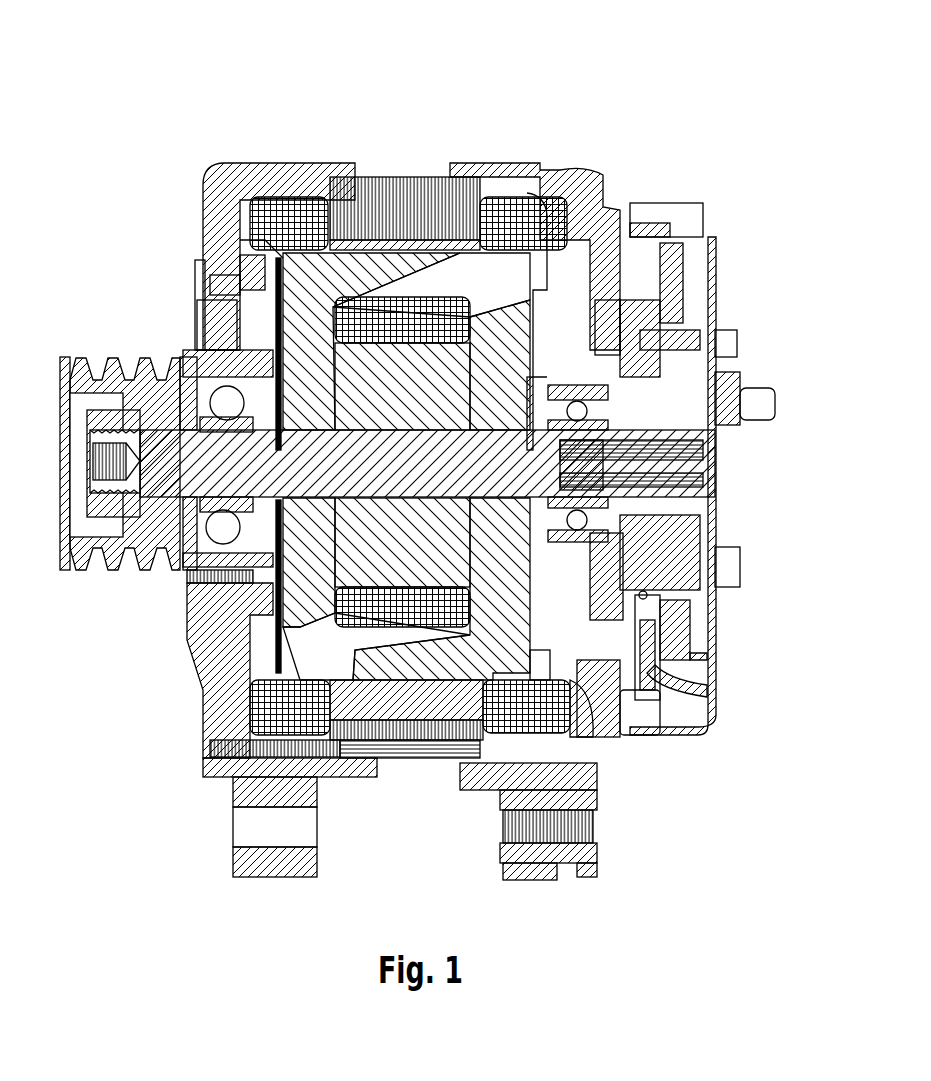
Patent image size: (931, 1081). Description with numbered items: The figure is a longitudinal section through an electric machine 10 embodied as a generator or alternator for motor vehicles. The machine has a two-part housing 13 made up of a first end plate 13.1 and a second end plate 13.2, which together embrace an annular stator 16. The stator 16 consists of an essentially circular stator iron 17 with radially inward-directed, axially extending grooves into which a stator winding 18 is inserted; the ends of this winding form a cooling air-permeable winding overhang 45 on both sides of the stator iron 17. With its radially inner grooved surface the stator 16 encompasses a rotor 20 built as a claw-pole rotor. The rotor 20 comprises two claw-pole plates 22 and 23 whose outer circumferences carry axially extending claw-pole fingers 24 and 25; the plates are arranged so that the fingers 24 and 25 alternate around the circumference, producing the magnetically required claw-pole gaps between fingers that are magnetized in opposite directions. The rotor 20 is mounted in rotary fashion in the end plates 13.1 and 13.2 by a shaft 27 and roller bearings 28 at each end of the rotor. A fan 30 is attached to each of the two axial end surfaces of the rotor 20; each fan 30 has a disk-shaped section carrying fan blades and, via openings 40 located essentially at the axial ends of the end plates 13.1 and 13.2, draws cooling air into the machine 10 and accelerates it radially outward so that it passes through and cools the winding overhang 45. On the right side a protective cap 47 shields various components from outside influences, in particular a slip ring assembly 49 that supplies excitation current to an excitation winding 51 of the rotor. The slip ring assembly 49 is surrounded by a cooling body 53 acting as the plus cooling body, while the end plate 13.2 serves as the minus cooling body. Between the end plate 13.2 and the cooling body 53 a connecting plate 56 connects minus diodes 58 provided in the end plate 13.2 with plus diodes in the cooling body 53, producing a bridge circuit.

The electric machine 10 is at (657, 67).
The housing 13 is at (205, 155).
The first end plate 13.1 is at (240, 166).
The second end plate 13.2 is at (582, 167).
The stator 16 is at (408, 150).
The stator iron 17 is at (373, 167).
The stator winding 18 is at (495, 250).
The winding overhang 45 is at (287, 167).
The claw-pole finger 25 is at (490, 290).
The claw-pole finger 24 is at (270, 238).
The fan 30 is at (217, 273).
The opening 40 is at (207, 315).
The roller bearing 28 is at (227, 410).
The shaft 27 is at (113, 553).
The claw-pole plate 22 is at (165, 483).
The rotor 20 is at (273, 667).
The excitation winding 51 is at (407, 607).
The minus diode 58 is at (627, 687).
The cooling body 53 is at (673, 298).
The slip ring assembly 49 is at (710, 508).
The claw-pole plate 23 is at (650, 597).
The connecting plate 56 is at (653, 620).
The protective cap 47 is at (697, 648).